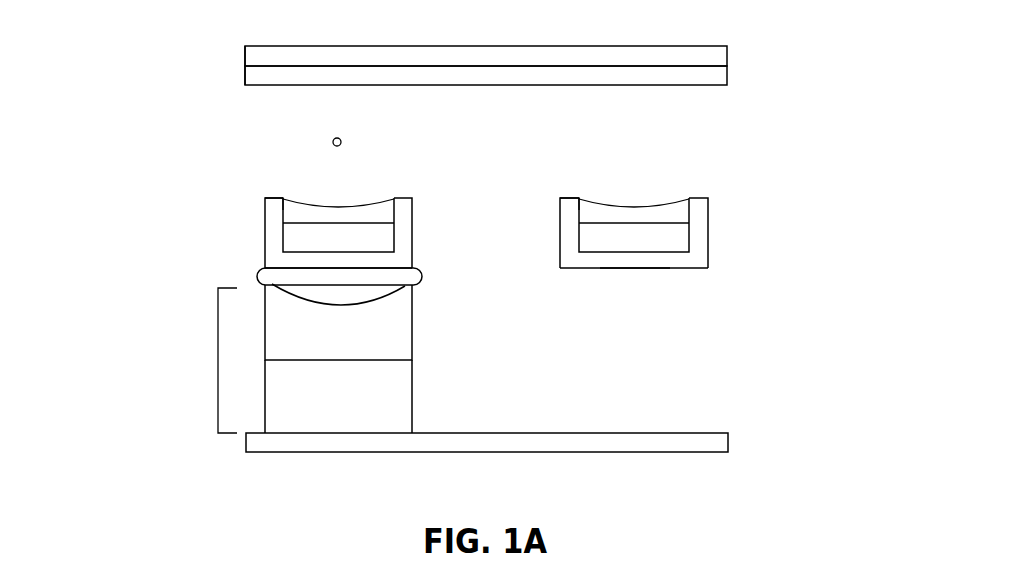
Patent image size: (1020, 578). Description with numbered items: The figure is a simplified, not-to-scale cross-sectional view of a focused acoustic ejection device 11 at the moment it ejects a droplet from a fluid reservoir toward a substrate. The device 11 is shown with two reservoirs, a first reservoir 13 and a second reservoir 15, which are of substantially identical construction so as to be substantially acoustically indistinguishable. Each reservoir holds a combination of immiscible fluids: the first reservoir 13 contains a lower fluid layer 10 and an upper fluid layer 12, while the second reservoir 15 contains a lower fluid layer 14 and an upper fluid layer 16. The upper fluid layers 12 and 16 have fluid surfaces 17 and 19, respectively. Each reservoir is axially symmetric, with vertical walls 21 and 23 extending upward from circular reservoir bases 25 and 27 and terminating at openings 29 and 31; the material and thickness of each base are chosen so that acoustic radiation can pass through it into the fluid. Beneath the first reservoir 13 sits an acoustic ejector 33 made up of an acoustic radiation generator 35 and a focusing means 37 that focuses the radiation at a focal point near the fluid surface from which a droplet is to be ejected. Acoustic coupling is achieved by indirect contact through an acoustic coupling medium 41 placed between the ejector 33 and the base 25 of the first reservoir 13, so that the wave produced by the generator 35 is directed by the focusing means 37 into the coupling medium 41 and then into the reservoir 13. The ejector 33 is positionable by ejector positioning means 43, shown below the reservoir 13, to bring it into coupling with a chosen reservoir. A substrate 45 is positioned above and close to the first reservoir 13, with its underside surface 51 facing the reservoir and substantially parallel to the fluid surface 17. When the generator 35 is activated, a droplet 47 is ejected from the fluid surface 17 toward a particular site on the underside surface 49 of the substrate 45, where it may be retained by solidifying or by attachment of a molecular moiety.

The lower fluid layer 10 is at (292, 242).
The device 11 is at (158, 282).
The upper fluid layer 12 is at (387, 210).
The first reservoir 13 is at (270, 215).
The lower fluid layer 14 is at (588, 238).
The second reservoir 15 is at (703, 248).
The upper fluid layer 16 is at (684, 213).
The fluid surface 17 is at (338, 207).
The fluid surface 19 is at (669, 202).
The vertical wall 21 is at (287, 215).
The vertical wall 23 is at (580, 213).
The reservoir base 25 is at (265, 280).
The reservoir base 27 is at (634, 268).
The opening 29 is at (295, 193).
The opening 31 is at (592, 193).
The acoustic ejector 33 is at (218, 360).
The acoustic radiation generator 35 is at (325, 413).
The focusing means 37 is at (325, 349).
The acoustic coupling medium 41 is at (325, 304).
The ejector positioning means 43 is at (255, 445).
The substrate 45 is at (245, 76).
The droplet 47 is at (341, 142).
The underside surface 49 is at (527, 85).
The underside surface 51 is at (720, 53).